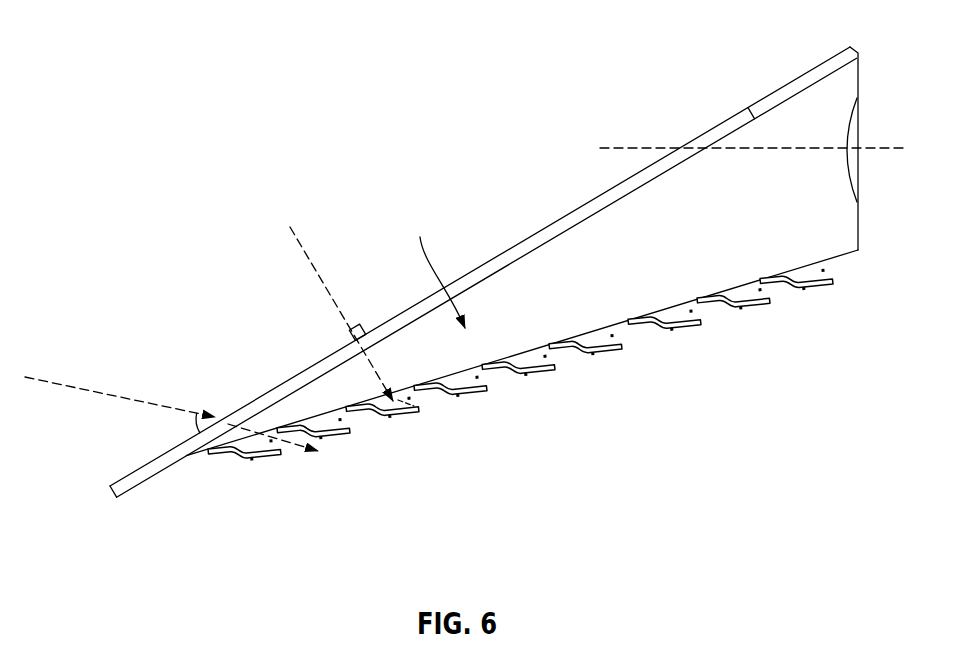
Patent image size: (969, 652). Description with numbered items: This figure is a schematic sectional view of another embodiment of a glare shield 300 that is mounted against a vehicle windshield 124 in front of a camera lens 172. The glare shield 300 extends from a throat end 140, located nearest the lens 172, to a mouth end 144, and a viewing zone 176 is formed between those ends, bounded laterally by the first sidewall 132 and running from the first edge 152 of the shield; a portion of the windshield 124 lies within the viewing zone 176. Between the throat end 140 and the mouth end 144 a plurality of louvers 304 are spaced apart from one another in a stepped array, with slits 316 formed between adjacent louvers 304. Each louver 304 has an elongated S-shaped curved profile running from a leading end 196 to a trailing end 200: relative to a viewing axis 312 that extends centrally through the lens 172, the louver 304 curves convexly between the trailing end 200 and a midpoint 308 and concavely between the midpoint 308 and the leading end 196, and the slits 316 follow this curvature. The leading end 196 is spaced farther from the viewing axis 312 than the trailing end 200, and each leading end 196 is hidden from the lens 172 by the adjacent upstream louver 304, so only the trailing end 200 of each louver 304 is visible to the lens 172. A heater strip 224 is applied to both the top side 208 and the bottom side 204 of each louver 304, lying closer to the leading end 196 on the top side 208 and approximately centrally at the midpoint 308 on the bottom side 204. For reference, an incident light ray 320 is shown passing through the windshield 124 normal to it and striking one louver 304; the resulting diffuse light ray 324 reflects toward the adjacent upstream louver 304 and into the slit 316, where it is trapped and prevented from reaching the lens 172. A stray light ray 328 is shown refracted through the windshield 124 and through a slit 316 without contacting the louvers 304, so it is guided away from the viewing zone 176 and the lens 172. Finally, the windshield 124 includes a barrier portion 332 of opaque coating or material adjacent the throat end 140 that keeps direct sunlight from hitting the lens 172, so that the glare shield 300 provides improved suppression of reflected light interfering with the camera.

The windshield 124 is at (550, 228).
The first sidewall 132 is at (306, 403).
The throat end 140 is at (858, 80).
The mouth end 144 is at (170, 465).
The first edge 152 is at (192, 454).
The lens 172 is at (857, 135).
The viewing zone 176 is at (433, 269).
The leading end 196 is at (277, 453).
The trailing end 200 is at (217, 453).
The bottom side 204 is at (330, 437).
The top side 208 is at (300, 428).
The heater strip 224 is at (520, 375).
The glare shield 300 is at (728, 333).
The louvers 304 is at (227, 453).
The midpoint 308 is at (248, 460).
The viewing axis 312 is at (598, 148).
The slits 316 is at (291, 452).
The incident light ray 320 is at (296, 238).
The diffuse light ray 324 is at (418, 395).
The stray light ray 328 is at (25, 377).
The barrier portion 332 is at (773, 100).